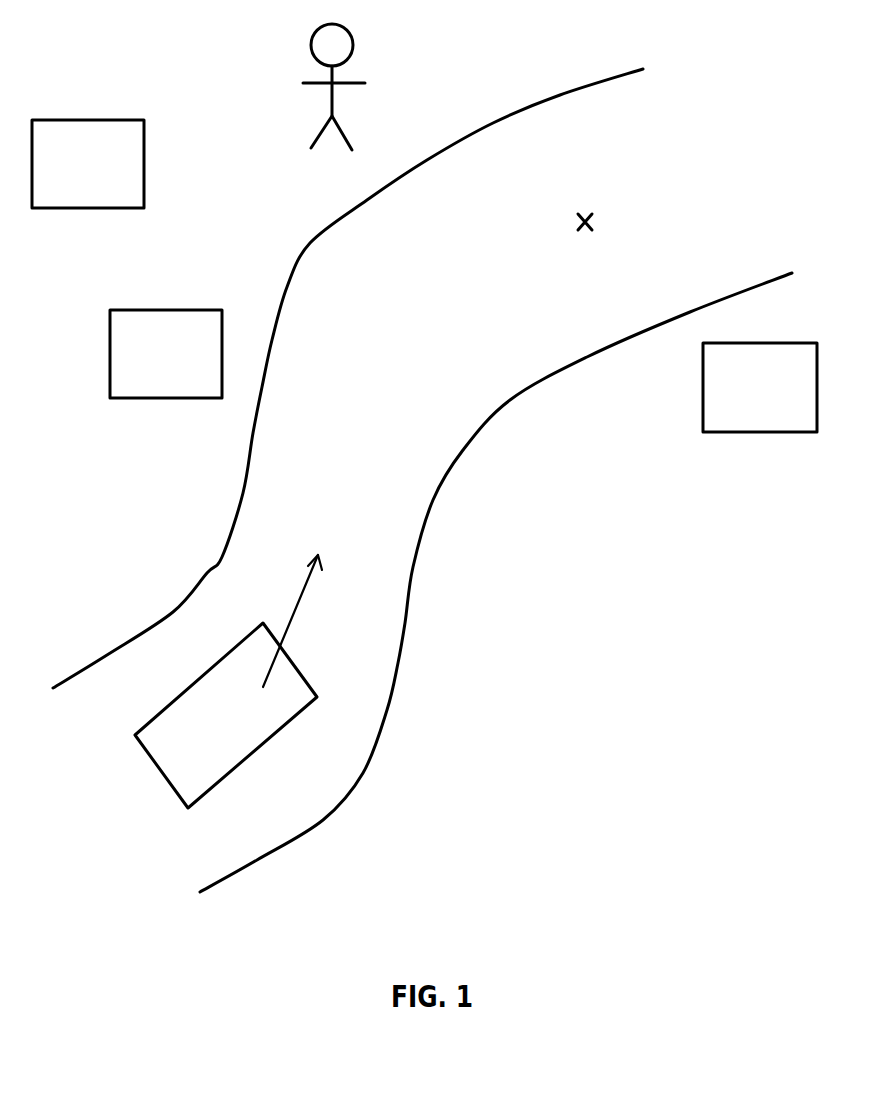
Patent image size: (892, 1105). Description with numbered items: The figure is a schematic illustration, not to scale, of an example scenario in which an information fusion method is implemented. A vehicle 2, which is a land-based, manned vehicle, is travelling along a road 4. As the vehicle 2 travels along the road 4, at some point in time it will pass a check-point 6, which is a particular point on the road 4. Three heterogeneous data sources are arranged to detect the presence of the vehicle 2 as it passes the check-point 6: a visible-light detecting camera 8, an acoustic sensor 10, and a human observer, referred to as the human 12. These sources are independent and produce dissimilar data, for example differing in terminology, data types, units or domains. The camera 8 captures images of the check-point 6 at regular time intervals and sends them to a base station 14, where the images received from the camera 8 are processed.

The vehicle 2 is at (214, 730).
The road 4 is at (397, 623).
The check-point 6 is at (592, 219).
The camera 8 is at (155, 363).
The acoustic sensor 10 is at (744, 400).
The human 12 is at (347, 135).
The base station 14 is at (72, 175).